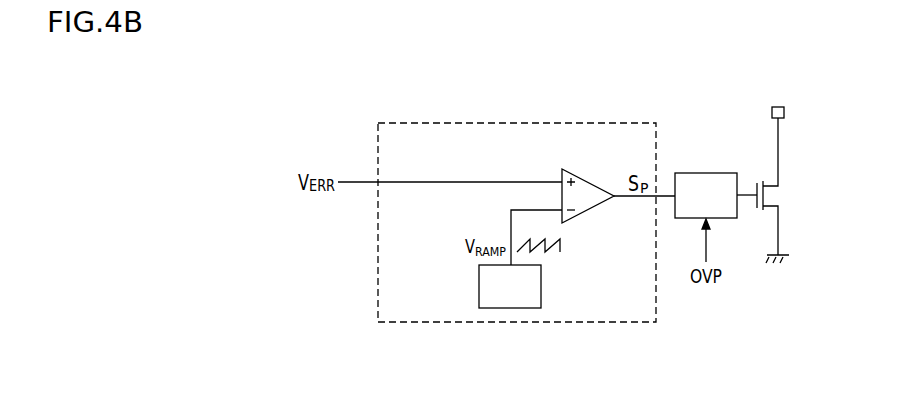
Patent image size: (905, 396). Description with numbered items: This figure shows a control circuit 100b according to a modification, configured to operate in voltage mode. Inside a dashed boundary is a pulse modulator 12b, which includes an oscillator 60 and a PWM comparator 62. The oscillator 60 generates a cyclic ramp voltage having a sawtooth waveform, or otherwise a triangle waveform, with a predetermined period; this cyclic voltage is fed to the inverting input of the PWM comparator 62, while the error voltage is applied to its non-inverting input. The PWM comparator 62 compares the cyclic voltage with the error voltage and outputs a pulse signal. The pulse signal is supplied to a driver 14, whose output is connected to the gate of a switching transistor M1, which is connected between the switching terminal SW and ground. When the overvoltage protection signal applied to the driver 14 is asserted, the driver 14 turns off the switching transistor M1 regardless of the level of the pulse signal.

The pulse modulator 12b is at (378, 291).
The PWM comparator 62 is at (588, 177).
The oscillator 60 is at (478, 291).
The driver 14 is at (718, 173).
The control circuit 100b is at (580, 361).
The switching transistor M1 is at (786, 192).
The switching terminal SW is at (778, 106).